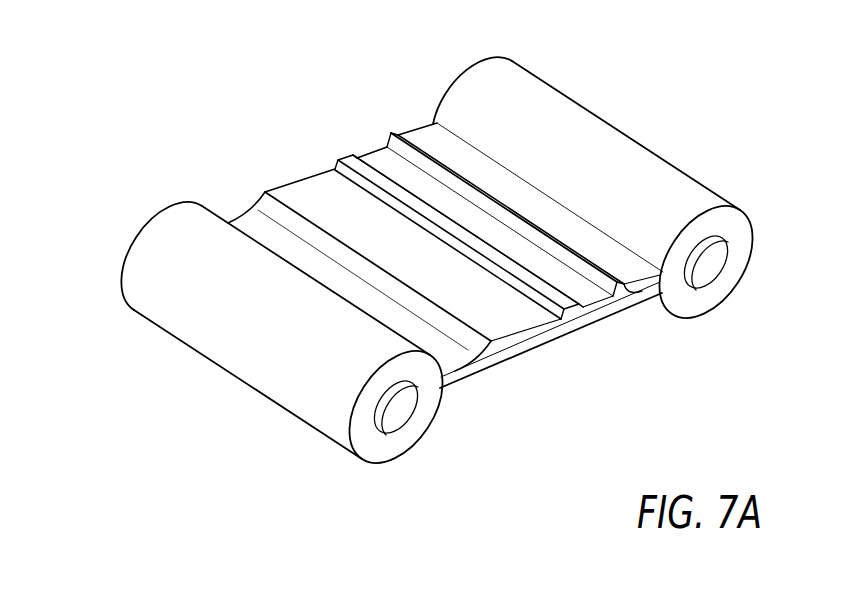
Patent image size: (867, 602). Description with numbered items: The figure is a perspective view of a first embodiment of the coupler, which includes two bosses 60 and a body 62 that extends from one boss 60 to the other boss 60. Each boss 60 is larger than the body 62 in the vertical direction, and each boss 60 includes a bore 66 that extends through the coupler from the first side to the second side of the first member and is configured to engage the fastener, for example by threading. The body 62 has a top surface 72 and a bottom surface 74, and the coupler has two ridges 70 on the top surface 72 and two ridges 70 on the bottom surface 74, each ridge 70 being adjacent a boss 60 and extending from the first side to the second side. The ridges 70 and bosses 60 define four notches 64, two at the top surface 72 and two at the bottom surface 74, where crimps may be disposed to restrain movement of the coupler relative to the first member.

The boss 60 is at (480, 57).
The body 62 is at (370, 150).
The notch 64 is at (427, 138).
The bore 66 is at (398, 424).
The ridge 70 is at (490, 377).
The top surface 72 is at (487, 235).
The bottom surface 74 is at (558, 341).